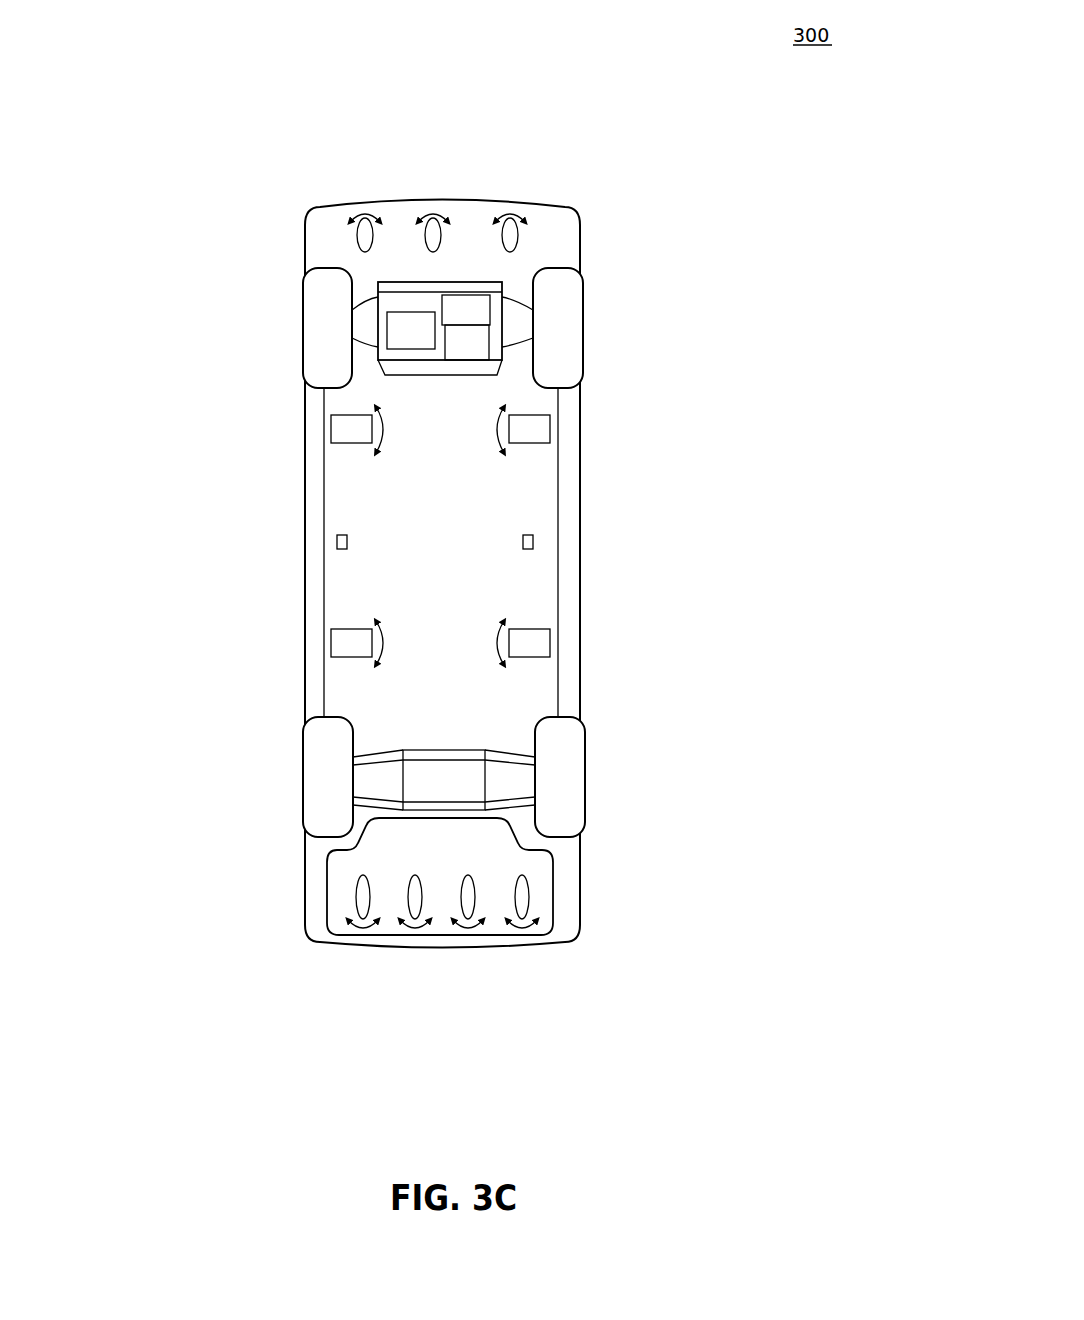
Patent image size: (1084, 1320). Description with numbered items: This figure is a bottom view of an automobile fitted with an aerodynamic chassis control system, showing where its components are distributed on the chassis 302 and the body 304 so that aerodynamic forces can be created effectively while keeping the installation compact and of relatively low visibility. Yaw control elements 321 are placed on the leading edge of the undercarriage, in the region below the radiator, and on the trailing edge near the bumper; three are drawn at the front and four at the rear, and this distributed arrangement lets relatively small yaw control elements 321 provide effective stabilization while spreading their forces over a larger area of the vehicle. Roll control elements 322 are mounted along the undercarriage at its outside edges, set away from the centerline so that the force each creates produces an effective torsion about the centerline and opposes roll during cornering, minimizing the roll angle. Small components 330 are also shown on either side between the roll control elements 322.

The chassis 302 is at (579, 498).
The body 304 is at (585, 777).
The yaw control elements 321 is at (358, 212).
The roll control elements 322 is at (345, 435).
The sensors 330 is at (337, 543).